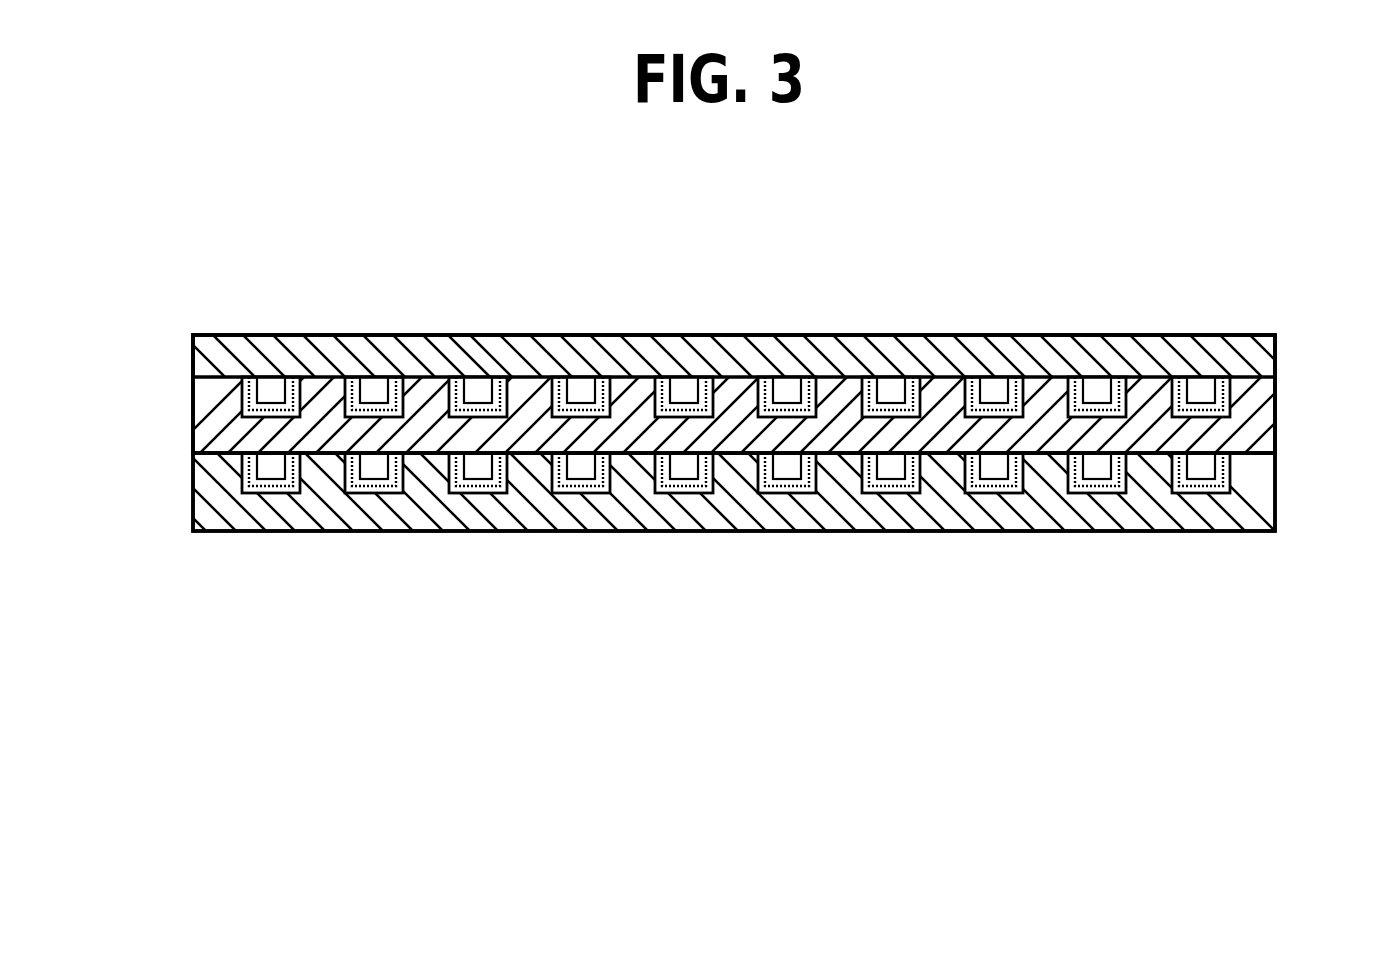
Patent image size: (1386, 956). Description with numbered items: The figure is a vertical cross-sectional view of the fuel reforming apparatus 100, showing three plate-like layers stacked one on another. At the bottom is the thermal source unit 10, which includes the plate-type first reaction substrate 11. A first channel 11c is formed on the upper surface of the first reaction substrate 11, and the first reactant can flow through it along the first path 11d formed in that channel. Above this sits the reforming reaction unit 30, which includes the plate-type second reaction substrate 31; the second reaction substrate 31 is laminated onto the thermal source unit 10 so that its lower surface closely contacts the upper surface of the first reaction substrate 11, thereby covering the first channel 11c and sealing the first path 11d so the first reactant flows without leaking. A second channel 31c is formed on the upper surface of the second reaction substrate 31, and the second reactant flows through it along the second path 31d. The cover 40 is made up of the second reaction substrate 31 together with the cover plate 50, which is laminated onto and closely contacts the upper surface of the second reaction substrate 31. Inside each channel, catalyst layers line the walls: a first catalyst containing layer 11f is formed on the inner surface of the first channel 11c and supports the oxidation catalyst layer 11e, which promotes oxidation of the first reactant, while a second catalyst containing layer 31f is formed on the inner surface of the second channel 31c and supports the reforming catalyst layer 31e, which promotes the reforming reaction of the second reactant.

The fuel reforming apparatus 100 is at (692, 255).
The thermal source unit 10 is at (1298, 487).
The first reaction substrate 11 is at (193, 497).
The first channel 11c is at (892, 496).
The first path 11d is at (993, 492).
The oxidation catalyst layer 11e is at (760, 468).
The first catalyst containing layer 11f is at (813, 477).
The reforming reaction unit 30 is at (1298, 404).
The second reaction substrate 31 is at (193, 418).
The second channel 31c is at (478, 415).
The second path 31d is at (1099, 415).
The reforming catalyst layer 31e is at (328, 403).
The second catalyst containing layer 31f is at (413, 413).
The cover 40 is at (117, 350).
The cover plate 50 is at (193, 362).